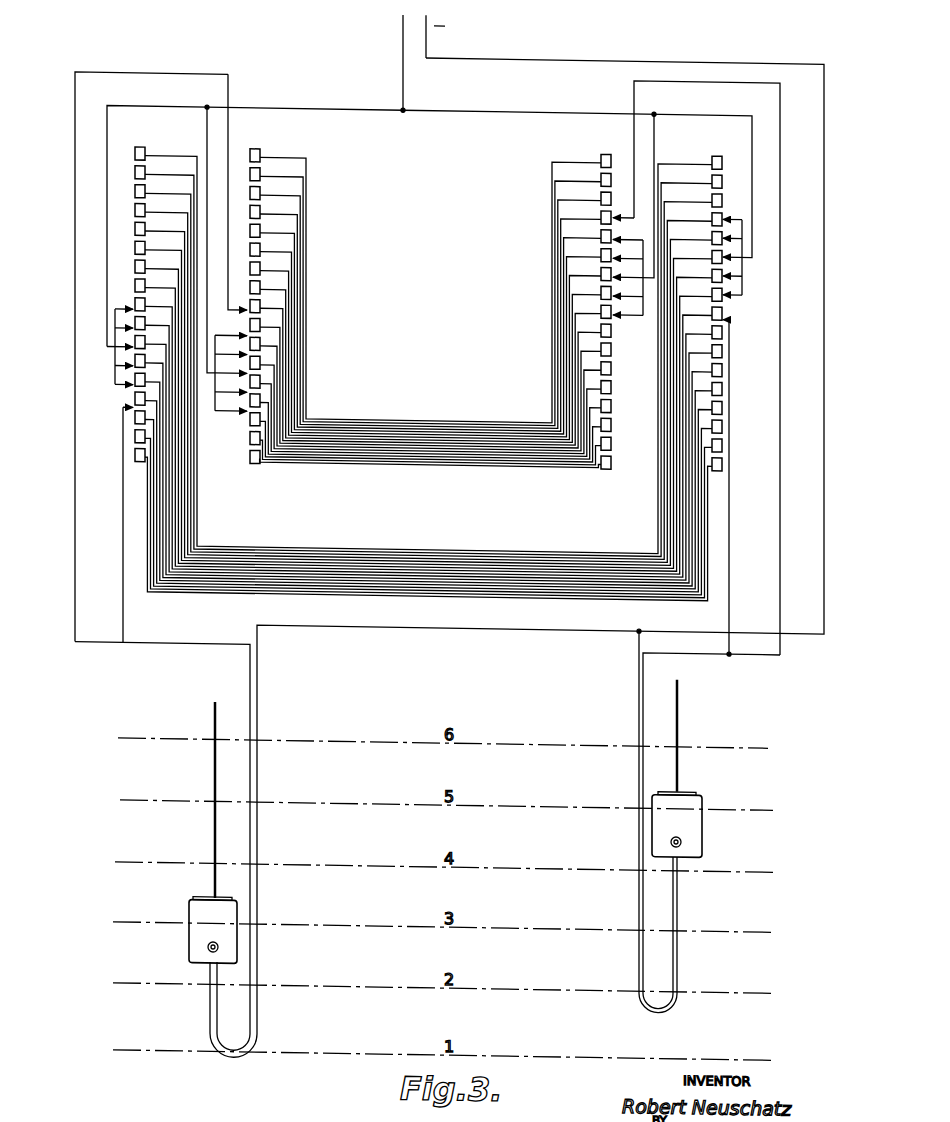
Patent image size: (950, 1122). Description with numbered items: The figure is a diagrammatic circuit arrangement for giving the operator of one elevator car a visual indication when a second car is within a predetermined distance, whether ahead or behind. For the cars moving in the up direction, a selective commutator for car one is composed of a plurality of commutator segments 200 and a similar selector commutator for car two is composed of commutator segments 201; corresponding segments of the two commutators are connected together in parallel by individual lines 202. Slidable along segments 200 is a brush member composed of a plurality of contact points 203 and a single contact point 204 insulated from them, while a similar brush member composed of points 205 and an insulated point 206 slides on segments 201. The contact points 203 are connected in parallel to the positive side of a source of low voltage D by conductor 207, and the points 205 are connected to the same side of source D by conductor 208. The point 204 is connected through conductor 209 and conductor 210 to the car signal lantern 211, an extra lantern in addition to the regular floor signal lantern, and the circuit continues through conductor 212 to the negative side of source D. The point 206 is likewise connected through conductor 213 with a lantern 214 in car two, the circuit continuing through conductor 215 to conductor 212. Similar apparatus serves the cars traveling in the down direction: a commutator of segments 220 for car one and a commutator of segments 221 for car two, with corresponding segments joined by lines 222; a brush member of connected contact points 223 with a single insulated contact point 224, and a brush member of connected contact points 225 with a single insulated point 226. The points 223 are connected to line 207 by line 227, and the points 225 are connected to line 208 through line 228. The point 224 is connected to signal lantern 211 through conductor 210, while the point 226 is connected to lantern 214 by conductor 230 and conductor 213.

The commutator segments 200 is at (150, 191).
The commutator segments 201 is at (711, 191).
The individual lines 202 is at (436, 578).
The contact points 203 is at (131, 345).
The single contact point 204 is at (126, 404).
The contact points 205 is at (733, 245).
The single contact point 206 is at (732, 308).
The conductor 207 is at (327, 104).
The conductor 208 is at (752, 193).
The conductor 209 is at (123, 552).
The conductor 210 is at (165, 640).
The car signal lantern 211 is at (219, 941).
The conductor 212 is at (791, 51).
The conductor 213 is at (730, 556).
The lantern 214 is at (682, 830).
The conductor 215 is at (637, 630).
The commutator segments 220 is at (264, 191).
The commutator segments 221 is at (596, 191).
The lines 222 is at (437, 449).
The contact points 223 is at (224, 409).
The single contact point 224 is at (170, 71).
The contact points 225 is at (624, 307).
The single point 226 is at (632, 226).
The line 227 is at (206, 122).
The line 228 is at (655, 120).
The conductor 230 is at (633, 120).
The source of low voltage D is at (414, 56).